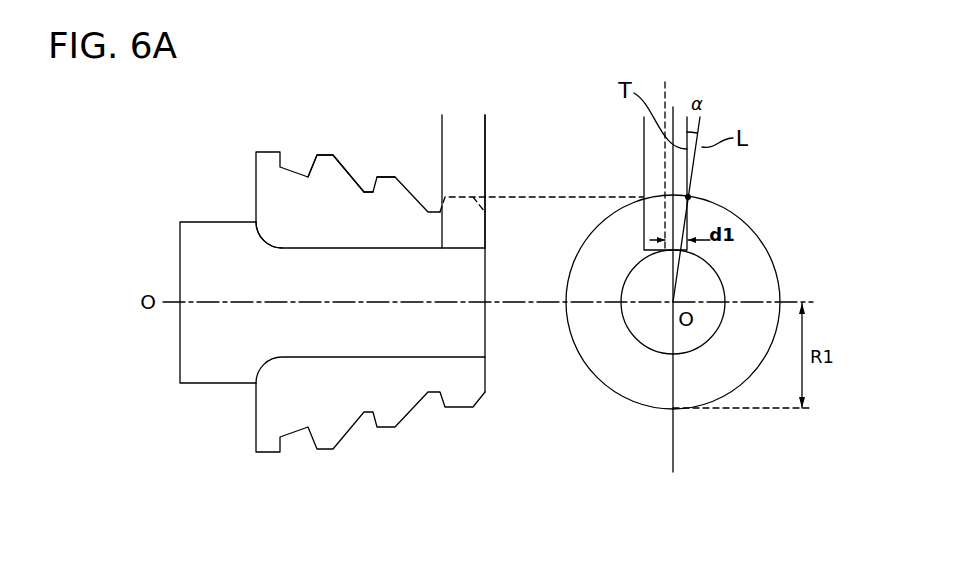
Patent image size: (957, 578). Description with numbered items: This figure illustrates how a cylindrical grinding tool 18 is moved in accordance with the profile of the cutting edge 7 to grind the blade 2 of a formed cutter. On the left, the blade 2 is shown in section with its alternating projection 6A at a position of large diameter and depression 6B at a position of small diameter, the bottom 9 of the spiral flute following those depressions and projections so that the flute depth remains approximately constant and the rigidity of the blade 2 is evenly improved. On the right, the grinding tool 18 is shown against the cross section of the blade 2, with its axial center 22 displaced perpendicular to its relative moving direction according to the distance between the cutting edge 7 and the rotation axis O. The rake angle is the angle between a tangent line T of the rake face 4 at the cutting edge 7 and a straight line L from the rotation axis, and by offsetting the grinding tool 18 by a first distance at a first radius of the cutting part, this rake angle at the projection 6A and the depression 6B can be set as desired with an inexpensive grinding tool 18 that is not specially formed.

The blade 2 is at (439, 444).
The rake face 4 is at (688, 222).
The projection 6A is at (323, 155).
The depression 6B is at (364, 190).
The cutting edge 7 is at (397, 177).
The bottom of the spiral flute 9 is at (282, 247).
The cylindrical grinding tool 18 is at (485, 152).
The axial center 22 is at (667, 92).